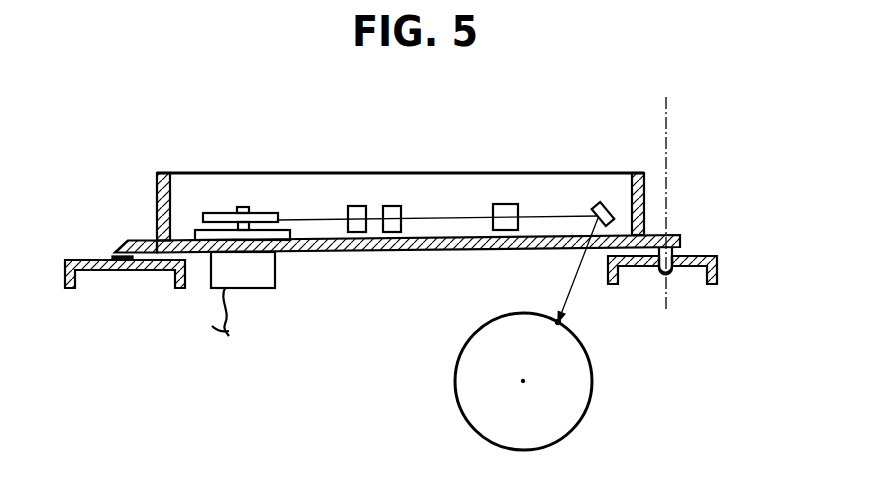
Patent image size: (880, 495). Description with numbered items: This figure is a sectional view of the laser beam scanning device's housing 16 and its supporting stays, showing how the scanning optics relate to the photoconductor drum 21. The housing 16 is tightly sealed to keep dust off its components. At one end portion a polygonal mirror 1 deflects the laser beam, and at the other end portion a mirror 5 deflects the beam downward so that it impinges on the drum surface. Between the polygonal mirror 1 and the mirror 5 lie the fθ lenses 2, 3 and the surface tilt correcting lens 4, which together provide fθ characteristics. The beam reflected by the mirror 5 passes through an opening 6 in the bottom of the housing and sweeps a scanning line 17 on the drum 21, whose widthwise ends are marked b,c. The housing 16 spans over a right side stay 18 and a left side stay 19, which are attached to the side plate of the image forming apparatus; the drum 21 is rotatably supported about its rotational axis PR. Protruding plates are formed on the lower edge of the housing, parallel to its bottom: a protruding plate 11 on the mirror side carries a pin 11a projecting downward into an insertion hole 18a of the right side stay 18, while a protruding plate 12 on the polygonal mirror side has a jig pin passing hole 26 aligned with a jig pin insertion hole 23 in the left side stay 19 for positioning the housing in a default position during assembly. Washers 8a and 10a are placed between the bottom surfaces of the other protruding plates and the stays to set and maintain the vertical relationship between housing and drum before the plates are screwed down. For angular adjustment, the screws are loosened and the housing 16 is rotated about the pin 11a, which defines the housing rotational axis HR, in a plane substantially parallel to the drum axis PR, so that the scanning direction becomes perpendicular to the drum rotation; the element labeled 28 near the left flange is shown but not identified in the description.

The polygonal mirror 1 is at (270, 213).
The fθ lens 2 is at (357, 208).
The fθ lens 3 is at (393, 208).
The surface tilt correcting lens 4 is at (508, 206).
The mirror 5 is at (604, 202).
The opening 6 is at (573, 250).
The washer 8a is at (650, 268).
The washer 10a is at (112, 257).
The protruding plate 11 is at (672, 250).
The pin 11a is at (673, 277).
The protruding plate 12 is at (150, 240).
The housing 16 is at (163, 174).
The scanning line 17 is at (556, 324).
The right side stay 18 is at (718, 267).
The insertion hole 18a is at (682, 262).
The left side stay 19 is at (70, 290).
The photoconductor drum 21 is at (565, 418).
The jig pin insertion hole 23 is at (145, 272).
The jig pin passing hole 26 is at (133, 240).
The flange edge 28 is at (115, 250).
The housing rotational axis HR is at (667, 108).
The rotational axis of photoconductive drum PR is at (515, 389).
The widthwise ends of scanning line b,c is at (560, 324).